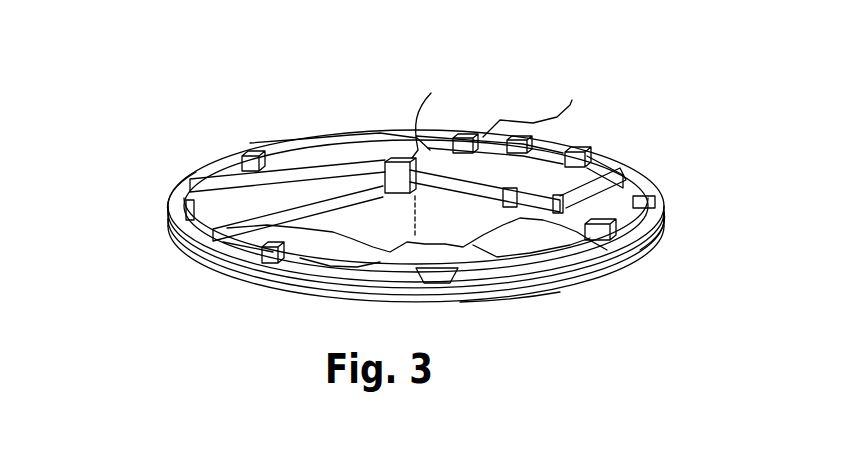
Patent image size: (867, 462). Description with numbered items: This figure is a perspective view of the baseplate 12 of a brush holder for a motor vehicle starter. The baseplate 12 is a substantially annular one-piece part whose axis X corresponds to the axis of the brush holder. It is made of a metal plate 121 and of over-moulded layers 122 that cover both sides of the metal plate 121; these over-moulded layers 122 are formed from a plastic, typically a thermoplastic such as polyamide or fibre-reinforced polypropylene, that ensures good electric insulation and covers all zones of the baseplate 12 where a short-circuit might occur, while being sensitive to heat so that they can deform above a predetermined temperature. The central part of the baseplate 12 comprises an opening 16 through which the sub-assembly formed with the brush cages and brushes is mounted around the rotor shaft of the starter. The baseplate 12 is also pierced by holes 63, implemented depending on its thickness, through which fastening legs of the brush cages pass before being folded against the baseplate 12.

The baseplate 12 is at (471, 92).
The hole 63 is at (212, 167).
The opening 16 is at (367, 200).
The axis X is at (427, 151).
The metal plate 121 is at (185, 220).
The over-moulded layers 122 is at (658, 235).